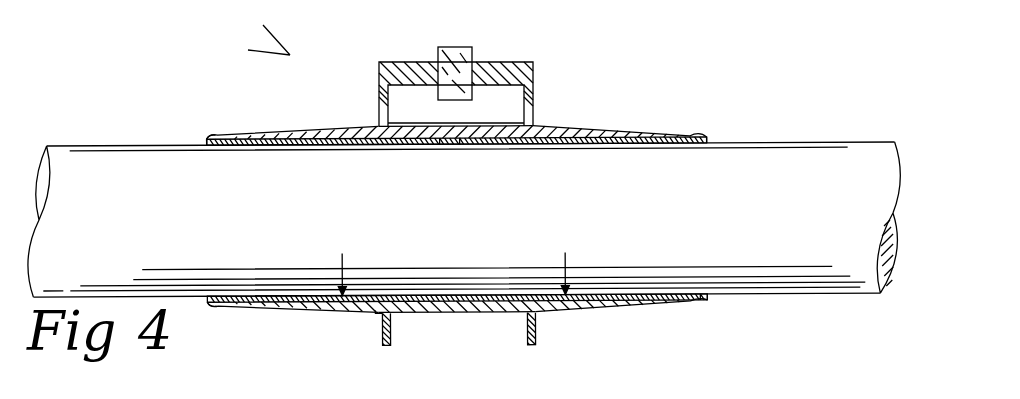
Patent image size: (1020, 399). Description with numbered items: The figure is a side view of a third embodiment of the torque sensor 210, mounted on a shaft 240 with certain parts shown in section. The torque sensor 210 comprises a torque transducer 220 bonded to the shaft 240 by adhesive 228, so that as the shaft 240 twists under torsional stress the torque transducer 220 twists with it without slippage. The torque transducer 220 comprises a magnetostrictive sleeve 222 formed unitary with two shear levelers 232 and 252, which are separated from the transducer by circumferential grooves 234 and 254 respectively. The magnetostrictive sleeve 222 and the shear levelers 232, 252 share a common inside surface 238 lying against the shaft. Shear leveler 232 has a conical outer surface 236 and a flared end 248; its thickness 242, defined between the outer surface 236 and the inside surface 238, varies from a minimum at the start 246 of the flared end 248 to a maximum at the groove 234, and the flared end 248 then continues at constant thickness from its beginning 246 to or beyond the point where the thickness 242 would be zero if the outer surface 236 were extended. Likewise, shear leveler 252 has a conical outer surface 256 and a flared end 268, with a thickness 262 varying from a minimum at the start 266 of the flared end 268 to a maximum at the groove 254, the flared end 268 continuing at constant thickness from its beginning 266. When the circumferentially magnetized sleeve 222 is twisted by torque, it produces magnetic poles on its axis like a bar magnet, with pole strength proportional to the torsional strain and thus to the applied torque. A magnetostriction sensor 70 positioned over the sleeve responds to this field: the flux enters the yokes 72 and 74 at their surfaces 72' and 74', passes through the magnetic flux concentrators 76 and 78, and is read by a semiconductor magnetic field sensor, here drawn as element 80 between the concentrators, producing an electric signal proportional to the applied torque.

The torque sensor 210 is at (259, 37).
The magnetostriction sensor 70 is at (583, 60).
The yoke 72 is at (343, 84).
The yoke 74 is at (518, 86).
The magnetic flux concentrator 76 is at (412, 62).
The magnetic flux concentrator 78 is at (485, 62).
The window 80 is at (455, 47).
The torque transducer 220 is at (618, 104).
The magnetostrictive sleeve 222 is at (442, 133).
The adhesive 228 is at (210, 143).
The shear leveler 232 is at (298, 300).
The circumferential groove 234 is at (377, 130).
The conical outer surface 236 is at (302, 133).
The inside surface 238 is at (457, 143).
The shaft 240 is at (816, 213).
The thickness 242 is at (347, 321).
The start of flared end 246 is at (245, 138).
The flared end 248 is at (230, 306).
The shear leveler 252 is at (620, 303).
The circumferential groove 254 is at (538, 147).
The conical outer surface 256 is at (583, 125).
The thickness 262 is at (570, 322).
The start of flared end 266 is at (672, 302).
The flared end 268 is at (690, 305).
The yoke surface 72' is at (418, 330).
The yoke surface 74' is at (501, 330).